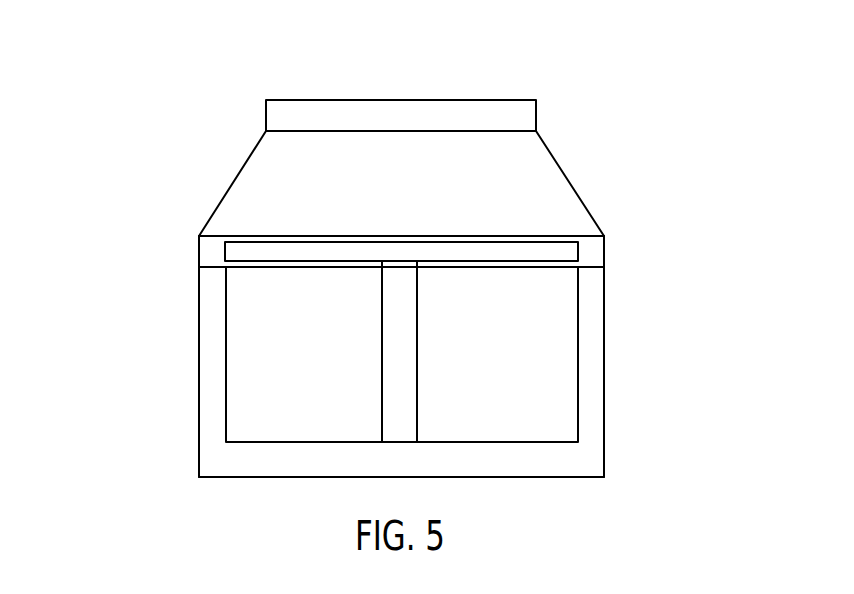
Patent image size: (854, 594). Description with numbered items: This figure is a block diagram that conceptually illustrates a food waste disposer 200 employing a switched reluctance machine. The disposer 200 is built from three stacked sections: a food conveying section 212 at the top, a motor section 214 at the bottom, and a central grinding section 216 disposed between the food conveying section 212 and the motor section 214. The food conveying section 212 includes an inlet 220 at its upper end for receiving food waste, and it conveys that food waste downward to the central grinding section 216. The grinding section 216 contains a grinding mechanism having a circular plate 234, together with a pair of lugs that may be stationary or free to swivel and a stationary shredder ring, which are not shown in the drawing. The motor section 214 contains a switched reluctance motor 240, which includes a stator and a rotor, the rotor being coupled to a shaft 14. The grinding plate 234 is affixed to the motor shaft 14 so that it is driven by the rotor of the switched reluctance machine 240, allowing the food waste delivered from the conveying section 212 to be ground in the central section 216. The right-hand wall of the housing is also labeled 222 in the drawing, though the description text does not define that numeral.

The disposer 200 is at (382, 279).
The food conveying section 212 is at (420, 200).
The motor section 214 is at (160, 356).
The central grinding section 216 is at (442, 231).
The inlet 220 is at (373, 89).
The right side wall 222 is at (660, 356).
The circular plate 234 is at (346, 239).
The switched reluctance motor 240 is at (473, 354).
The shaft 14 is at (373, 386).